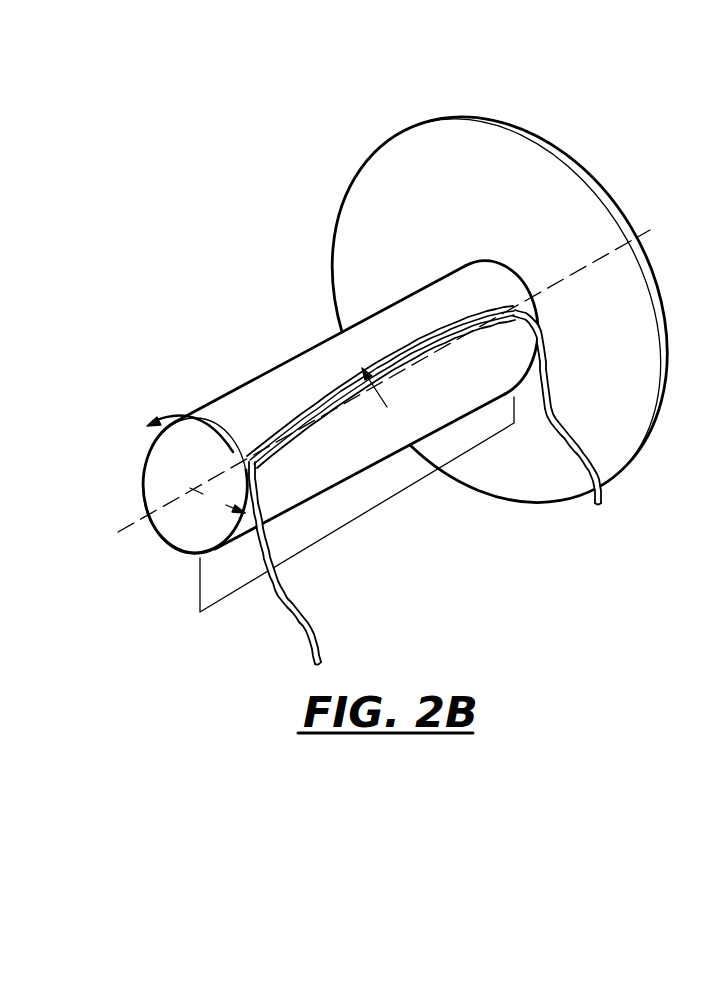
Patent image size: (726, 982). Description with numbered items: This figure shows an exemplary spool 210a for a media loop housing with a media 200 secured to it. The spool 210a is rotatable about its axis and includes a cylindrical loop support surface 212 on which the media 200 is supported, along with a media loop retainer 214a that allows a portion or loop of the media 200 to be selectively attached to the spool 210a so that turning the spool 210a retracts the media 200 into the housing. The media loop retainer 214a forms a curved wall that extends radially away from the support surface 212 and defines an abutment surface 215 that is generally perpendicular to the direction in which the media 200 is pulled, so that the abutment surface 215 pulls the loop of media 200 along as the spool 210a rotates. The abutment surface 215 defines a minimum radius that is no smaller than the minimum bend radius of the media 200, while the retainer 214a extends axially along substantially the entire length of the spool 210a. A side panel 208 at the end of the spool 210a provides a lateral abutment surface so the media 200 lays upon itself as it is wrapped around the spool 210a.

The media 200 is at (547, 423).
The side panel 208 is at (425, 157).
The spool 210a is at (296, 336).
The loop support surface 212 is at (273, 380).
The media loop retainer 214a is at (283, 432).
The abutment surface 215 is at (423, 330).